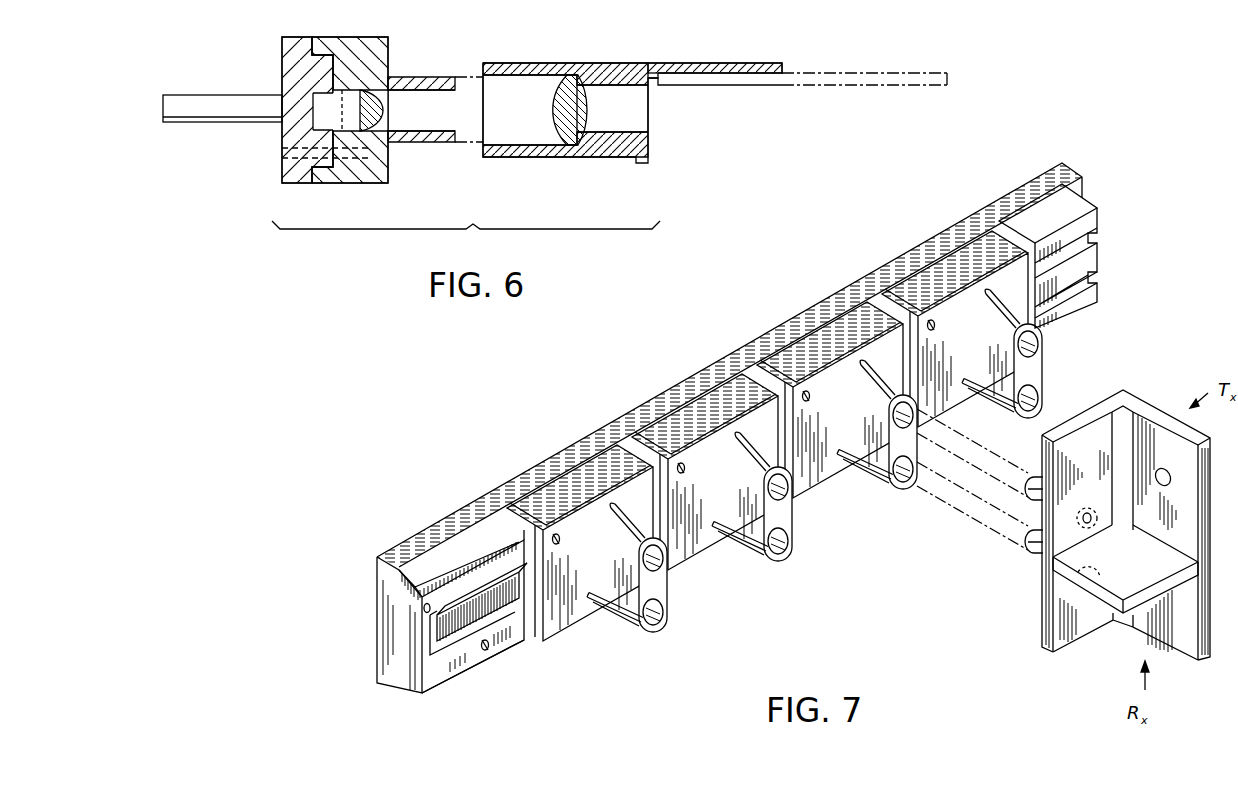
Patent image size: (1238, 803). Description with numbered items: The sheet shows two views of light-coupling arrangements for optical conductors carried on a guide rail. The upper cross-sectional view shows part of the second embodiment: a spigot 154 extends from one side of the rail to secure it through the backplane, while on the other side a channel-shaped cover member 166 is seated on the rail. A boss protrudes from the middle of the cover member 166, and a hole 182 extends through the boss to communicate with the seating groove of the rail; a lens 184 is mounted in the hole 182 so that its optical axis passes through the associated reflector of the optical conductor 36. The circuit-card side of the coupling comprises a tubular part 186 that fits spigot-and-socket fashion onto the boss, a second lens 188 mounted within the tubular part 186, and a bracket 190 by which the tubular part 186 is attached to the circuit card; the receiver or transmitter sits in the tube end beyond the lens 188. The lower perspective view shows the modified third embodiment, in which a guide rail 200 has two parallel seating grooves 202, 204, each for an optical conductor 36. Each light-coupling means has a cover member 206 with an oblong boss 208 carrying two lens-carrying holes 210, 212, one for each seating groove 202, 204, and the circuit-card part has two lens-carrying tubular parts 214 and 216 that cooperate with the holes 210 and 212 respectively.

In FIG. 6, the spigot 154 is at (208, 93).
In FIG. 6, the cover member 166 is at (362, 183).
In FIG. 6, the hole 182 is at (459, 146).
In FIG. 6, the lens 184 is at (384, 103).
In FIG. 6, the tubular part 186 is at (505, 63).
In FIG. 6, the second lens 188 is at (553, 108).
In FIG. 6, the bracket 190 is at (741, 63).
In FIG. 7, the guide rail 200 is at (523, 473).
In FIG. 7, the optical conductor 36 is at (503, 548).
In FIG. 7, the cover member 206 is at (948, 275).
In FIG. 7, the oblong boss 208 is at (1030, 368).
In FIG. 7, the lens-carrying hole 210 is at (1036, 346).
In FIG. 7, the lens-carrying hole 212 is at (1040, 400).
In FIG. 7, the seating groove 202 is at (1097, 232).
In FIG. 7, the seating groove 204 is at (1097, 278).
In FIG. 7, the lens-carrying tubular part 214 is at (1026, 488).
In FIG. 7, the lens-carrying tubular part 216 is at (1032, 540).